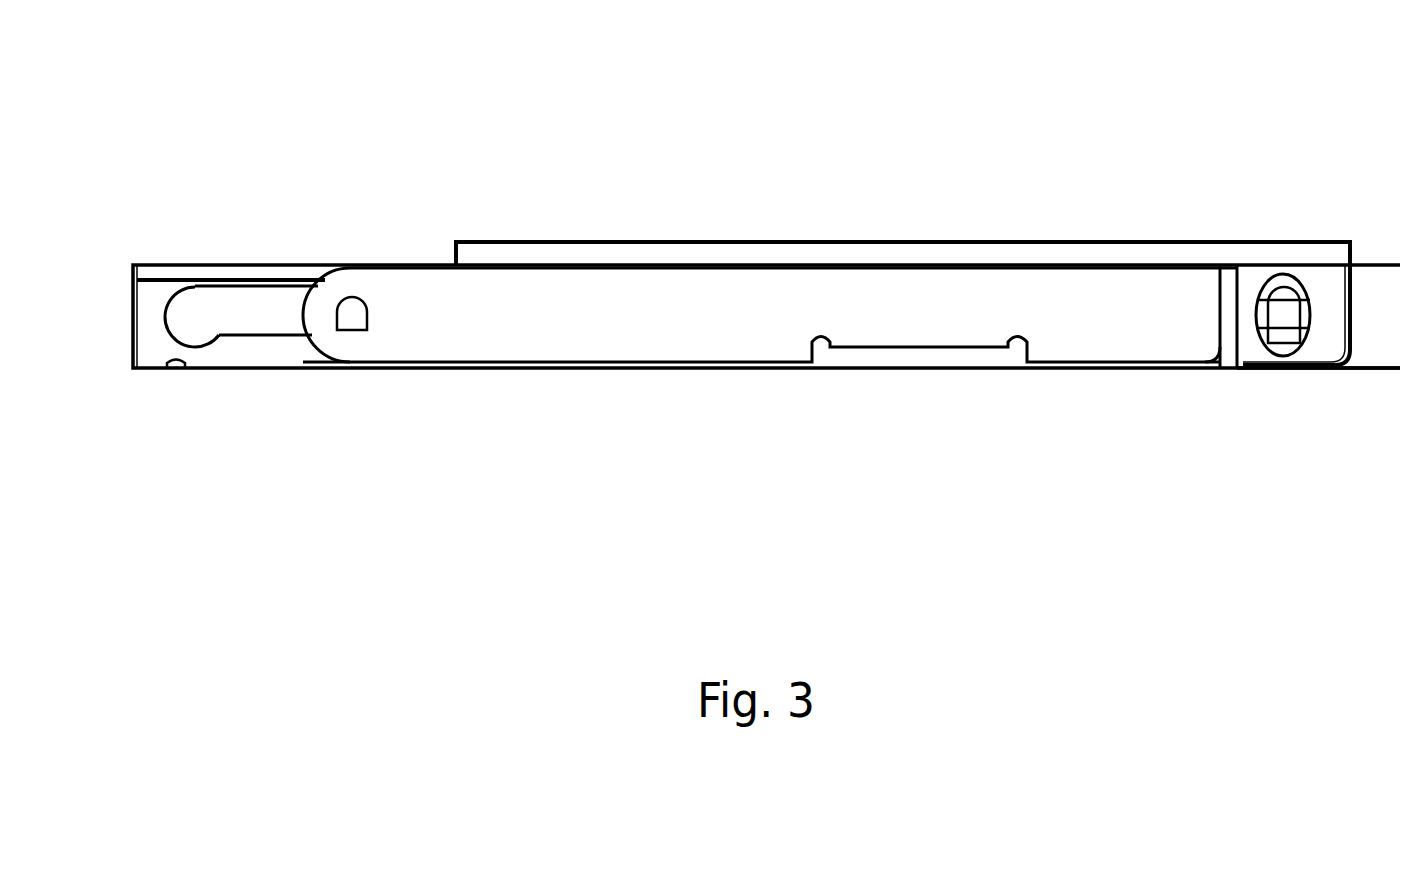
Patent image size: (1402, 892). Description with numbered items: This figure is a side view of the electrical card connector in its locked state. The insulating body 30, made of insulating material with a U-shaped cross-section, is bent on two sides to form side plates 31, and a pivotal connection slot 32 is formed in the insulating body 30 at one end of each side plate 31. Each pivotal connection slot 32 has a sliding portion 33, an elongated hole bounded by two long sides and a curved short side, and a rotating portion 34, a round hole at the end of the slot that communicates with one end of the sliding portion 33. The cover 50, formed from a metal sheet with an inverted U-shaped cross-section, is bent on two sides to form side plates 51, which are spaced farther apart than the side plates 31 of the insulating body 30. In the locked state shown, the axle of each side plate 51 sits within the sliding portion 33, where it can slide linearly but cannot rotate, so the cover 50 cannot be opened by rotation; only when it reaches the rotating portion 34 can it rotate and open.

The insulating body 30 is at (932, 369).
The side plate 31 is at (1377, 345).
The pivotal connection slot 32 is at (274, 441).
The sliding portion 33 is at (265, 335).
The rotating portion 34 is at (193, 346).
The cover 50 is at (948, 240).
The side plate 51 is at (1112, 295).